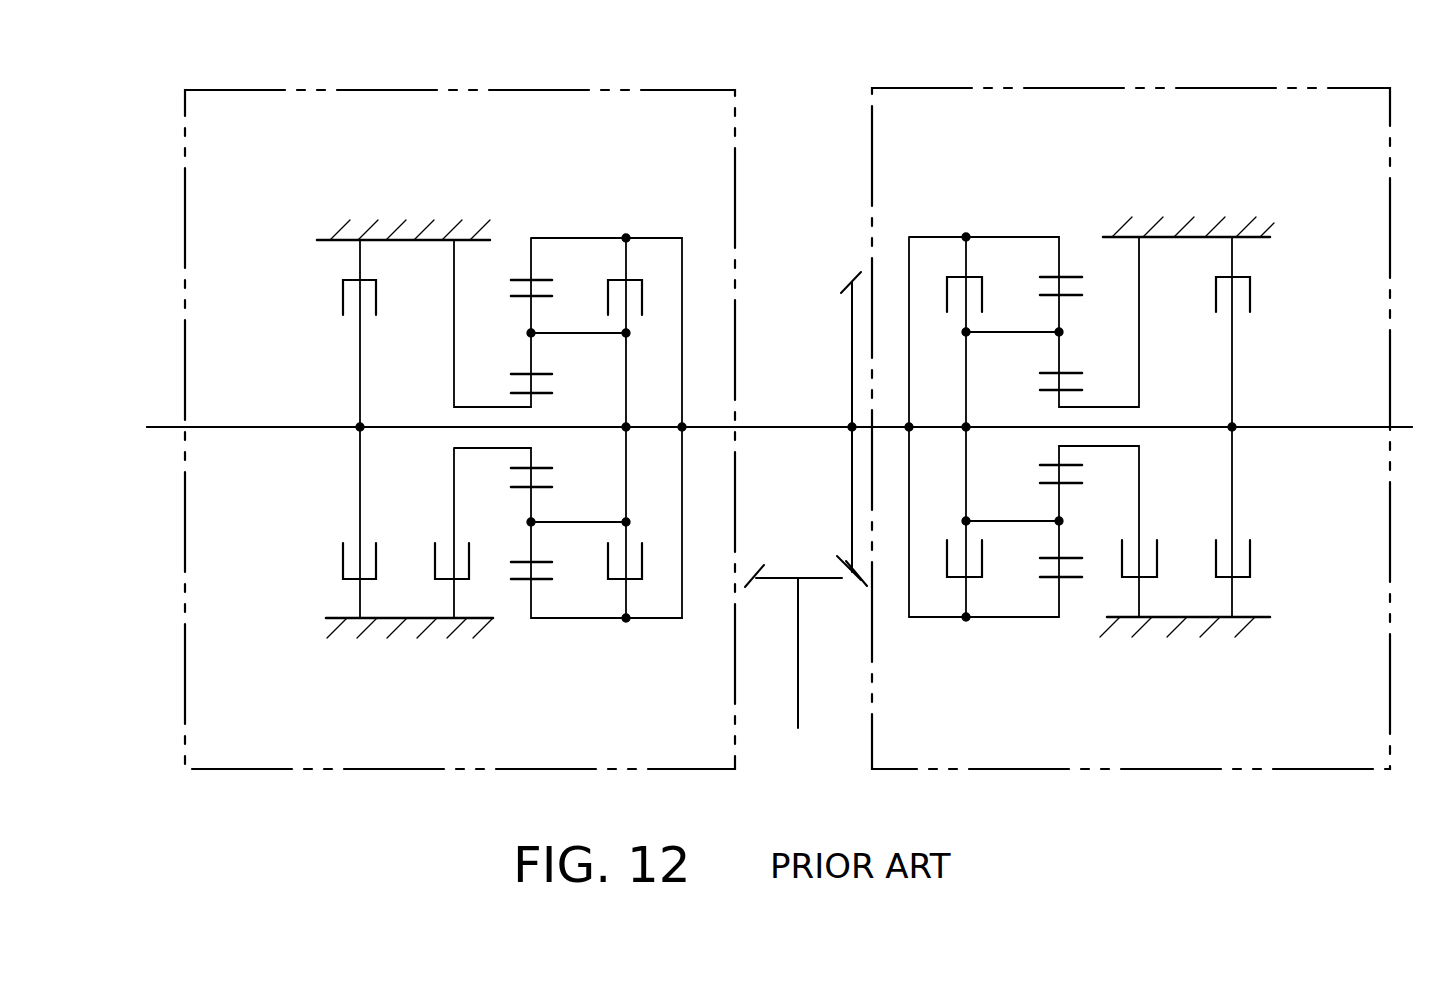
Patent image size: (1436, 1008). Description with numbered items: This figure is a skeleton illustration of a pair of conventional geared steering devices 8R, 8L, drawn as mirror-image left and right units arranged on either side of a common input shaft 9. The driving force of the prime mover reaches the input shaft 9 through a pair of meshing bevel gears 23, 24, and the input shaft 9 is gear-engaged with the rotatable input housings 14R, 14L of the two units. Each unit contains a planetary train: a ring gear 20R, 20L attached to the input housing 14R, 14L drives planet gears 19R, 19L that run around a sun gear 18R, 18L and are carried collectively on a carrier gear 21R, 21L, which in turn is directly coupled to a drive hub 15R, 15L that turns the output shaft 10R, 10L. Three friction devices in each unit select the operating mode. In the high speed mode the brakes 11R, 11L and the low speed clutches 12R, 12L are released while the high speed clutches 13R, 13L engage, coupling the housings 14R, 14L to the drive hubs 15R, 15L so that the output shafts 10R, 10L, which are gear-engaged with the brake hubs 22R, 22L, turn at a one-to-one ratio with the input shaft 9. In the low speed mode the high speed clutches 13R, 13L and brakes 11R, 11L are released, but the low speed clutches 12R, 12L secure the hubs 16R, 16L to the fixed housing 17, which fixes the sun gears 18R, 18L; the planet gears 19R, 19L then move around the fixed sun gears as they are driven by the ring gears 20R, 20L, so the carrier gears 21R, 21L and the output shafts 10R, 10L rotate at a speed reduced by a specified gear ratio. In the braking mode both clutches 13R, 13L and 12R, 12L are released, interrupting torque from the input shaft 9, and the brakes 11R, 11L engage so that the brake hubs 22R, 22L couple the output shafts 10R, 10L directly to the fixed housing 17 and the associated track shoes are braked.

The geared steering device 8L is at (533, 90).
The geared steering device 8R is at (1065, 88).
The input shaft 9 is at (812, 430).
The output shaft 10L is at (277, 430).
The output shaft 10R is at (1328, 430).
The brake 11L is at (343, 294).
The brake 11R is at (1250, 288).
The low speed clutch 12L is at (438, 568).
The low speed clutch 12R is at (1157, 565).
The high speed clutch 13L is at (642, 565).
The high speed clutch 13R is at (948, 565).
The rotatable housing 14L is at (656, 238).
The rotatable housing 14R is at (932, 237).
The drive hub 15L is at (626, 388).
The drive hub 15R is at (966, 398).
The hub 16L is at (485, 407).
The hub 16R is at (1092, 407).
The fixed housing 17 is at (383, 240).
The sun gear 18L is at (544, 472).
The sun gear 18R is at (1053, 465).
The planet gear 19L is at (537, 565).
The planet gear 19R is at (1041, 567).
The ring gear 20L is at (511, 578).
The ring gear 20R is at (1093, 568).
The carrier gear 21L is at (575, 333).
The carrier gear 21R is at (1014, 332).
The brake hub 22L is at (360, 345).
The brake hub 22R is at (1232, 365).
The bevel gear 23 is at (800, 692).
The bevel gear 24 is at (852, 370).